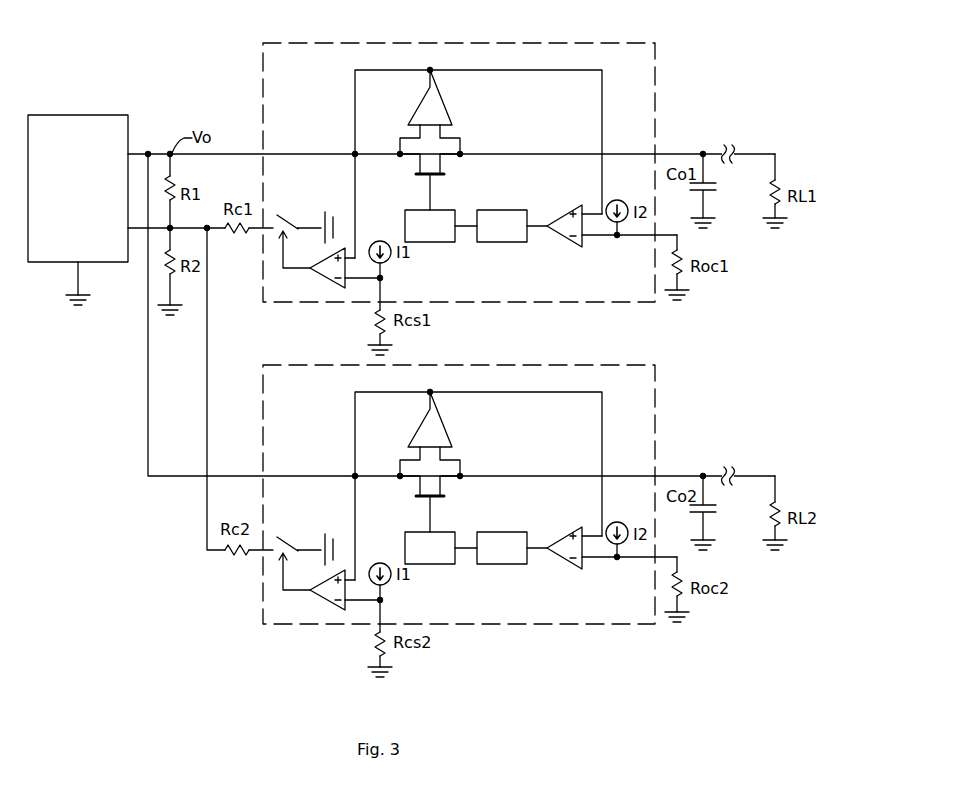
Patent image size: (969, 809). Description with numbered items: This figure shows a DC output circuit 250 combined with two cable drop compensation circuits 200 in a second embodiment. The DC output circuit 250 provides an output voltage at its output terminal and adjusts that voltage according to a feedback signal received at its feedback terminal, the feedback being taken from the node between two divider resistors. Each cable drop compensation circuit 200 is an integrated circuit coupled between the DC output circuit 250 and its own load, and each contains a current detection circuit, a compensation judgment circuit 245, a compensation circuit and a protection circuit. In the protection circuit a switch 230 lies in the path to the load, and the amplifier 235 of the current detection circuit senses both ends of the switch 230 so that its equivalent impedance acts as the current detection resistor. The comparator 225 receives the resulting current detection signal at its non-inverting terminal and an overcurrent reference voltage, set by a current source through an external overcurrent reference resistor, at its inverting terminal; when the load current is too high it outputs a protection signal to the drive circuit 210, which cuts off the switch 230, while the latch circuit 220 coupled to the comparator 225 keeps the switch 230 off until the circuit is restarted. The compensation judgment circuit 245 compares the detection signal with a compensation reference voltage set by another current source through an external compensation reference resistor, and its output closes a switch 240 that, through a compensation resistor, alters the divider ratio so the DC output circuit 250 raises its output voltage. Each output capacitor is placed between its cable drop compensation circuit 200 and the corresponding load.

The cable drop compensation circuit 200 is at (458, 43).
The drive circuit 210 is at (430, 387).
The latch circuit 220 is at (502, 387).
The comparator 225 is at (560, 240).
The switch 230 is at (444, 163).
The amplifier 235 is at (447, 103).
The switch 240 is at (289, 221).
The compensation judgment circuit 245 is at (318, 283).
The DC output circuit 250 is at (78, 210).